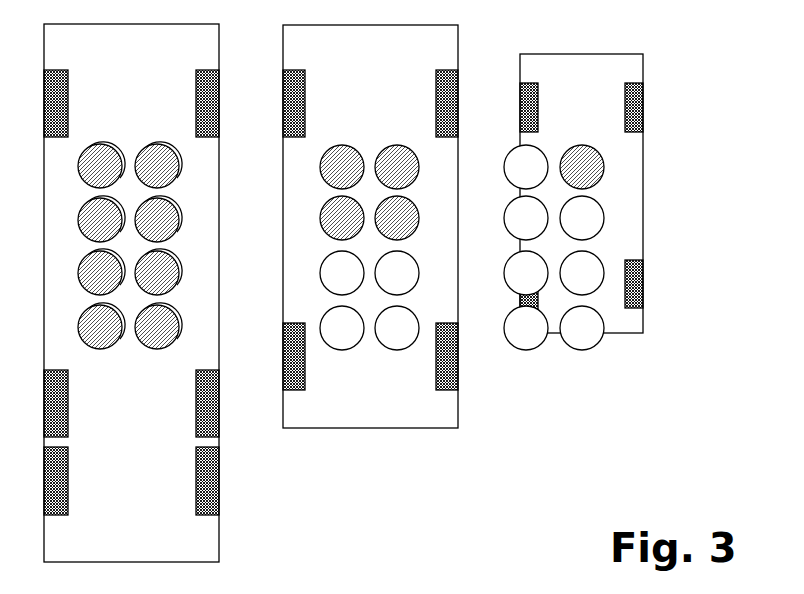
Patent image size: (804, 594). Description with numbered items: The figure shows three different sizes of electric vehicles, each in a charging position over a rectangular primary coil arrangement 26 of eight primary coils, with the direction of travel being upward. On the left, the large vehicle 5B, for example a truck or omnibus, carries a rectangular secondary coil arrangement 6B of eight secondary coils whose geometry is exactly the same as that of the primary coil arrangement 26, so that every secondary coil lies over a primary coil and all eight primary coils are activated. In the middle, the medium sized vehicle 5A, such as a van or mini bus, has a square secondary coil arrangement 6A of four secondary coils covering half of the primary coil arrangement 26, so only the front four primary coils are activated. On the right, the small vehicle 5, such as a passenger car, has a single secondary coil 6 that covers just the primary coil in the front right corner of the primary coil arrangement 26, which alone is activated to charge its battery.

The small vehicle 5 is at (613, 318).
The medium sized vehicle 5A is at (432, 410).
The large vehicle 5B is at (193, 533).
The secondary coil 6 is at (577, 143).
The secondary coil arrangement 6A is at (380, 126).
The secondary coil arrangement 6B is at (143, 120).
The primary coil arrangement 26 is at (121, 374).